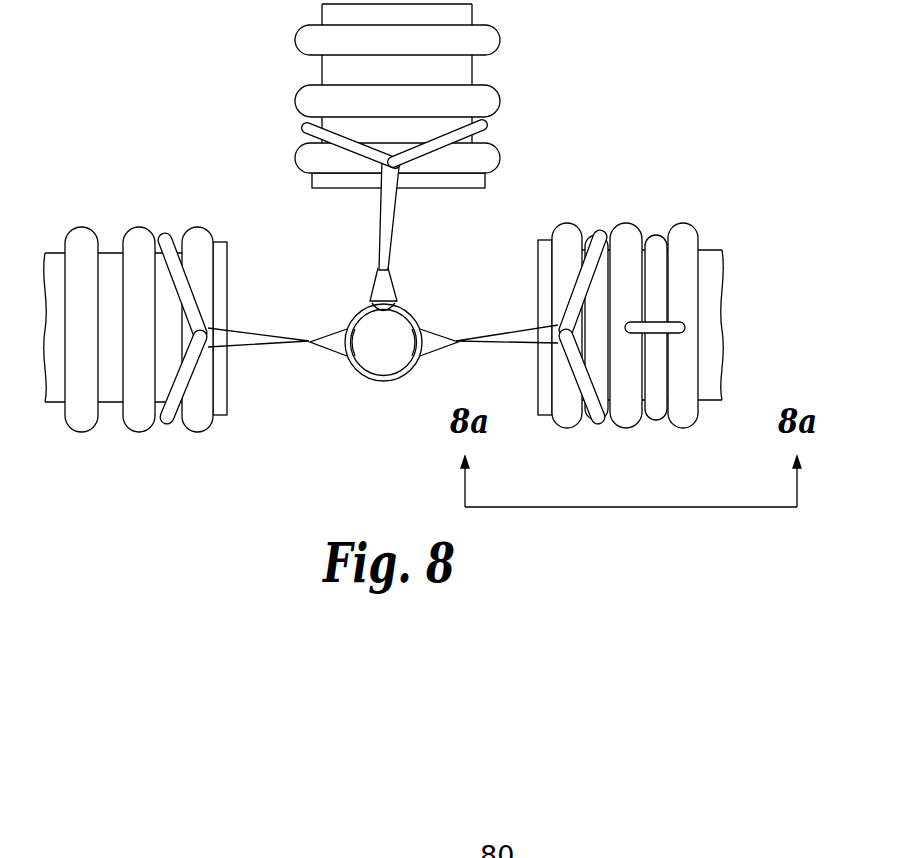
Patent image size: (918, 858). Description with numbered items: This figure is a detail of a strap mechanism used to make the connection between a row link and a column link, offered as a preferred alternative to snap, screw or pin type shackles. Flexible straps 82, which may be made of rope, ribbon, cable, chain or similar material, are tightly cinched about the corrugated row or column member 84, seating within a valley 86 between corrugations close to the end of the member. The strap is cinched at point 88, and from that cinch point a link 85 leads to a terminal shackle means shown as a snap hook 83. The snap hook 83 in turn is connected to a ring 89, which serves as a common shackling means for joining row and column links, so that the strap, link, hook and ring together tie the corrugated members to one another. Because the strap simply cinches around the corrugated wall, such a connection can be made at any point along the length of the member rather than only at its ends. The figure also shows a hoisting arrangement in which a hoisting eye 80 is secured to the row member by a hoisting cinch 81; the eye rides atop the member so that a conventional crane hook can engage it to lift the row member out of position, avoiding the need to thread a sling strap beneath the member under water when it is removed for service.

The hoisting eye 80 is at (683, 330).
The hoisting cinch 81 is at (653, 240).
The flexible strap 82 is at (383, 130).
The snap hook 83 is at (392, 287).
The row or column member 84 is at (490, 85).
The link 85 is at (387, 207).
The valley 86 is at (500, 128).
The cinch point 88 is at (381, 158).
The ring 89 is at (360, 378).